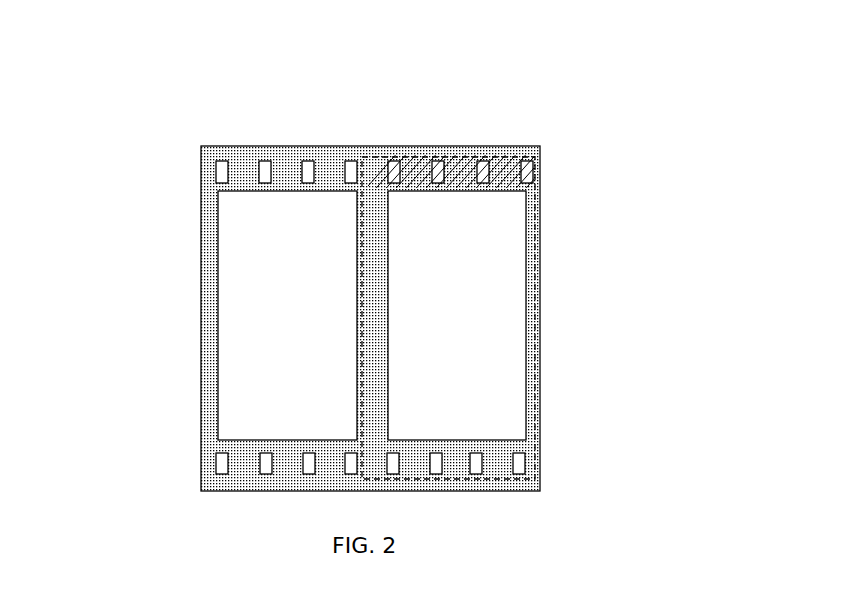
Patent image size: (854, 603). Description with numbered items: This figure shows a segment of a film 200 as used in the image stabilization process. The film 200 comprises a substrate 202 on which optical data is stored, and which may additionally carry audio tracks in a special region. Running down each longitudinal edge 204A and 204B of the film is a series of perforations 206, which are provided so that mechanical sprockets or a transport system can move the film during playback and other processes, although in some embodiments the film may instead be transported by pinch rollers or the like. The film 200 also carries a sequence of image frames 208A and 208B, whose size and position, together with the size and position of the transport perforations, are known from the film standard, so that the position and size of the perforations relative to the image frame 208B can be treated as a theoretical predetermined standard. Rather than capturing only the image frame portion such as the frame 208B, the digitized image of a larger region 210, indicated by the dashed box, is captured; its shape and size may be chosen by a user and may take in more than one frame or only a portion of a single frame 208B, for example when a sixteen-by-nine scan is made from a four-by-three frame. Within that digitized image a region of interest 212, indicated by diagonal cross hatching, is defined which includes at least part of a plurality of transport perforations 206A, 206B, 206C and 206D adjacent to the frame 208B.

The film 200 is at (398, 285).
The substrate 202 is at (318, 162).
The longitudinal edge 204A is at (208, 130).
The longitudinal edge 204B is at (190, 466).
The perforations 206 is at (265, 160).
The transport perforation 206A is at (389, 160).
The transport perforation 206B is at (428, 160).
The transport perforation 206C is at (487, 150).
The transport perforation 206D is at (534, 152).
The image frame 208A is at (310, 299).
The image frame 208B is at (472, 299).
The region 210 is at (540, 286).
The region of interest 212 is at (480, 110).